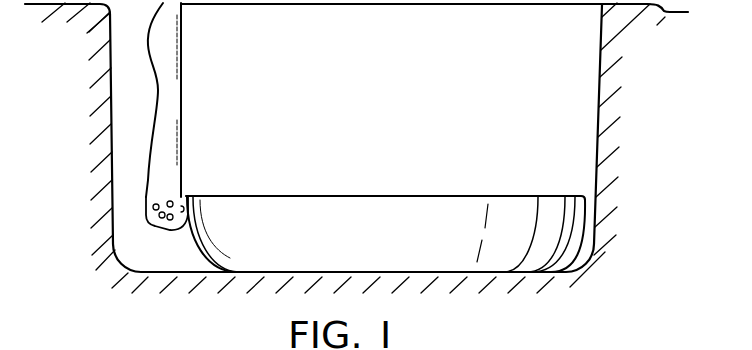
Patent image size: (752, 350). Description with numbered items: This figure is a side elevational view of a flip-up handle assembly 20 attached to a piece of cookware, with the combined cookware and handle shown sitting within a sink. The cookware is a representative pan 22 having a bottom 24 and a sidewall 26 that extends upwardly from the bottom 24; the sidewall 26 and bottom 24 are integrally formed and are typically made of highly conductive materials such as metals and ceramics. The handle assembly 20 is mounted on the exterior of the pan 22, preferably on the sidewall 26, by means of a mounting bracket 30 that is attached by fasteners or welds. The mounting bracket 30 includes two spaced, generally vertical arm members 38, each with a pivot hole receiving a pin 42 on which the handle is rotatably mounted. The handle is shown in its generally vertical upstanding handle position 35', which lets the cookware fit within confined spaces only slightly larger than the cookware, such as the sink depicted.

The flip-up handle assembly 20 is at (211, 93).
The pan 22 is at (357, 195).
The bottom 24 is at (475, 275).
The sidewall 26 is at (580, 213).
The mounting bracket 30 is at (182, 229).
The upstanding handle position 35' is at (202, 100).
The arm members 38 is at (190, 213).
The pin 42 is at (181, 196).